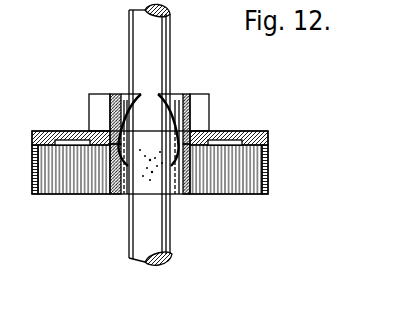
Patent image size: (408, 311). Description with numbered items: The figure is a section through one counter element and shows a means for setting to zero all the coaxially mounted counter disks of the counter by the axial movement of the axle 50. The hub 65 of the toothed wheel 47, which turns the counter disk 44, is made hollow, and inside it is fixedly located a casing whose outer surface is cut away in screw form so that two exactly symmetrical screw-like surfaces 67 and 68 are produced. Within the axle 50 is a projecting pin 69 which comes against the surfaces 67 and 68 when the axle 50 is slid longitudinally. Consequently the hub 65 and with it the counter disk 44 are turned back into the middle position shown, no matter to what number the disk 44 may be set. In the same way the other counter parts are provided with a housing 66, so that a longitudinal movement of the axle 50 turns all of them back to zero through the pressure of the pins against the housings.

The counter disk 44 is at (268, 172).
The toothed wheel 47 is at (209, 107).
The axle 50 is at (165, 35).
The hub 65 is at (186, 95).
The housing 66 is at (133, 100).
The screw-like surface 67 is at (189, 155).
The screw-like surface 68 is at (124, 141).
The projecting pin 69 is at (150, 175).